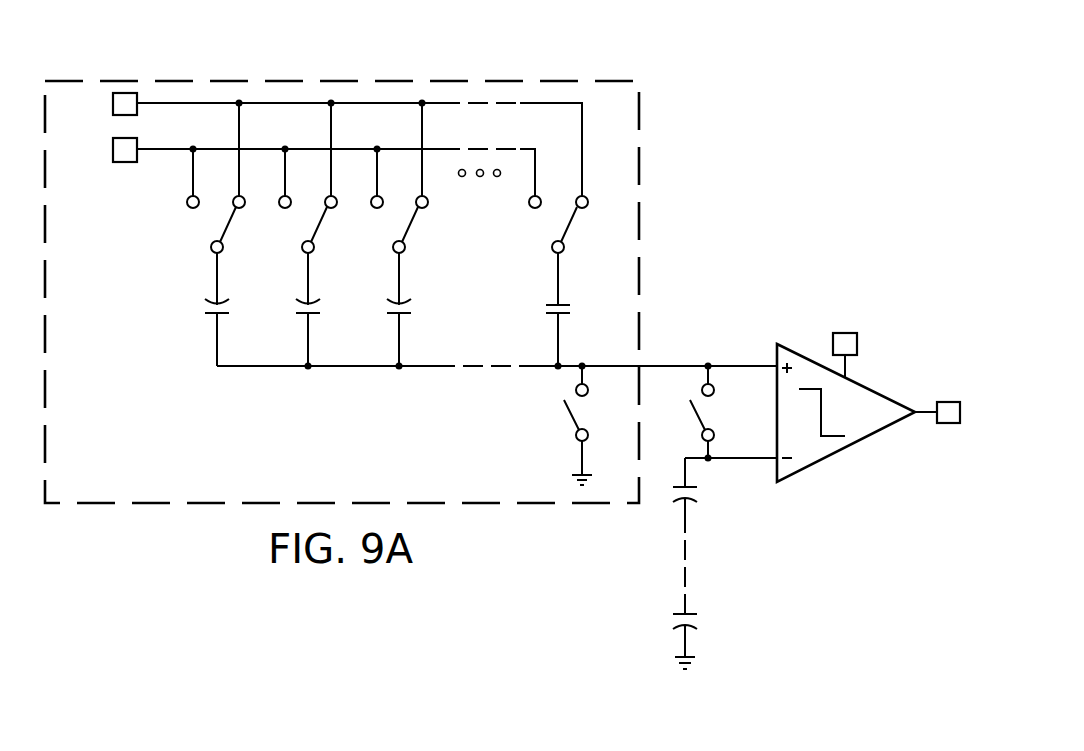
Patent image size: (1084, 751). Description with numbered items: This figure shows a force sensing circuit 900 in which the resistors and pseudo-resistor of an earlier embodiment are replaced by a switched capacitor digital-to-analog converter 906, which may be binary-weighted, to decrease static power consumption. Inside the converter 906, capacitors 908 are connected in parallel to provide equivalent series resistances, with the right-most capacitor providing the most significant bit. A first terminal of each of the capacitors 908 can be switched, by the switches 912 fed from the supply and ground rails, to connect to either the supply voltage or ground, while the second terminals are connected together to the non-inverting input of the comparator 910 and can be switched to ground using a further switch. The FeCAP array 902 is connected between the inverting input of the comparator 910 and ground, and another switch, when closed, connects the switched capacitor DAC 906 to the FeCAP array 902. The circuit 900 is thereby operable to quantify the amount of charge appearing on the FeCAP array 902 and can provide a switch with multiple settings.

The circuit 900 is at (822, 137).
The switched capacitor digital-to-analog converter 906 is at (340, 80).
The capacitors 908 is at (198, 288).
The capacitor switches 912 is at (179, 197).
The comparator 910 is at (845, 448).
The FeCAP array 902 is at (697, 618).